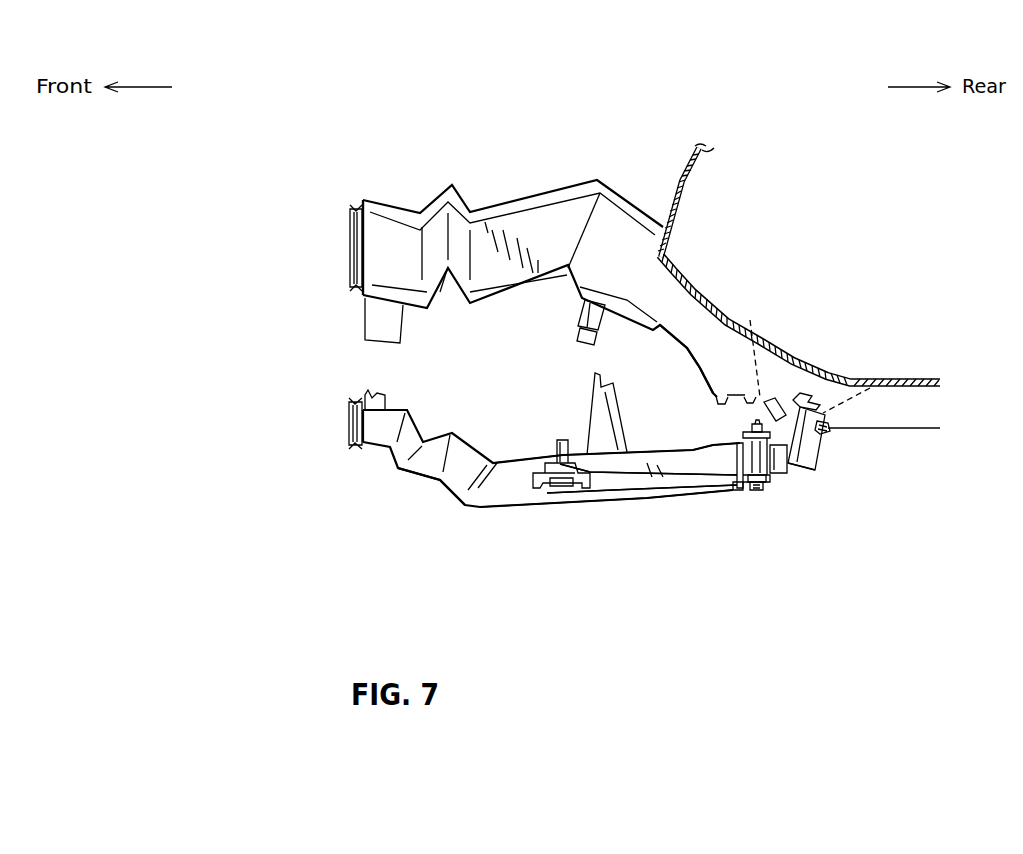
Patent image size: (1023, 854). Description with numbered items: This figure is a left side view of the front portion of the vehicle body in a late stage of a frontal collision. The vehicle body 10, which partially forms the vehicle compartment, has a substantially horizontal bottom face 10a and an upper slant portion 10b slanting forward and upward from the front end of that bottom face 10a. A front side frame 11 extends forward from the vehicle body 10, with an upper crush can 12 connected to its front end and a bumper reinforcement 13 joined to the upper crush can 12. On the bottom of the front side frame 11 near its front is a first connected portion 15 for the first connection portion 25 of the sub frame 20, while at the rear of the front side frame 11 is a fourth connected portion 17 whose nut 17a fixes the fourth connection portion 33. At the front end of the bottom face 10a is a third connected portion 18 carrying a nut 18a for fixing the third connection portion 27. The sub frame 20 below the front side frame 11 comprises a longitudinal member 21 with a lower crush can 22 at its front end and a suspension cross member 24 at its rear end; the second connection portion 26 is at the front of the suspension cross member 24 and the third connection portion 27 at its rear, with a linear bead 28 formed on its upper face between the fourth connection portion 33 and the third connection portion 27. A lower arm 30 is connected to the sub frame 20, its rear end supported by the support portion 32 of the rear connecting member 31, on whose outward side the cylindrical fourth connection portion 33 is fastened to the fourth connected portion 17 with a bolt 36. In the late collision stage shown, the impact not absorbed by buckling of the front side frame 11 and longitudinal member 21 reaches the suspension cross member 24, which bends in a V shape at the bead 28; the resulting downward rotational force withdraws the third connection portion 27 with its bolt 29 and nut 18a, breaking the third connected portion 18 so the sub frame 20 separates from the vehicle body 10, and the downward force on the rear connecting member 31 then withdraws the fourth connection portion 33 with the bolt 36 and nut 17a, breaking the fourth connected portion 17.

The vehicle body 10 is at (931, 375).
The bottom face 10a is at (903, 390).
The upper slant portion 10b is at (730, 327).
The front side frame 11 is at (517, 185).
The upper crush can 12 is at (363, 203).
The bumper reinforcement 13 is at (353, 237).
The first connected portion 15 is at (377, 322).
The fourth connected portion 17 is at (717, 403).
The nut 17a is at (752, 422).
The third connected portion 18 is at (820, 397).
The nut 18a is at (825, 428).
The sub frame 20 is at (470, 518).
The longitudinal member 21 is at (425, 470).
The lower crush can 22 is at (347, 423).
The suspension cross member 24 is at (590, 497).
The first connection portion 25 is at (367, 397).
The second connection portion 26 is at (580, 312).
The third connection portion 27 is at (813, 440).
The bead 28 is at (790, 467).
The bolt 29 is at (823, 417).
The lower arm 30 is at (635, 496).
The rear connecting member 31 is at (734, 498).
The support portion 32 is at (742, 490).
The fourth connection portion 33 is at (770, 480).
The bolt 36 is at (755, 490).